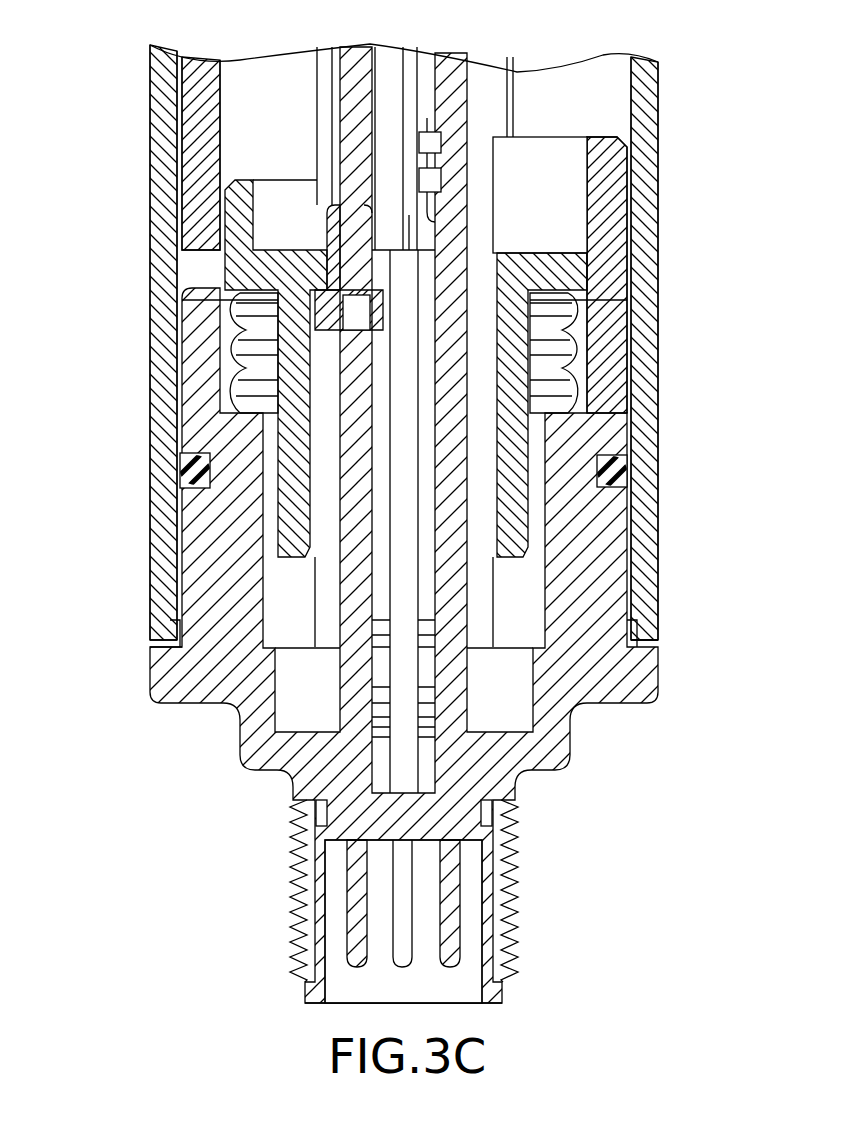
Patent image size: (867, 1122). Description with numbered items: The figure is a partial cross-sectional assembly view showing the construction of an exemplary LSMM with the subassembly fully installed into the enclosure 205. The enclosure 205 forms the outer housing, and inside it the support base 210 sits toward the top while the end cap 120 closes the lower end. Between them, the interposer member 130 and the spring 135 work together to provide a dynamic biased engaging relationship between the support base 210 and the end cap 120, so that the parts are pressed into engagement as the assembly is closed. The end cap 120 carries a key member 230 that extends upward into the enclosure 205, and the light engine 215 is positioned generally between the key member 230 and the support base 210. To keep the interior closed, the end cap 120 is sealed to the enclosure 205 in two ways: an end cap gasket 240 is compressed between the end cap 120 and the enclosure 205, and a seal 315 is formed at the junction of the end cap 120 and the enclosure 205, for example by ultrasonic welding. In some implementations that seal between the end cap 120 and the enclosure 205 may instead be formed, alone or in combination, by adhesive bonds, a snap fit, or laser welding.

The end cap 120 is at (610, 704).
The interposer member 130 is at (515, 530).
The spring 135 is at (565, 370).
The enclosure 205 is at (645, 331).
The support base 210 is at (262, 102).
The light engine 215 is at (452, 158).
The key member 230 is at (607, 165).
The end cap gasket 240 is at (620, 470).
The seal 315 is at (656, 650).